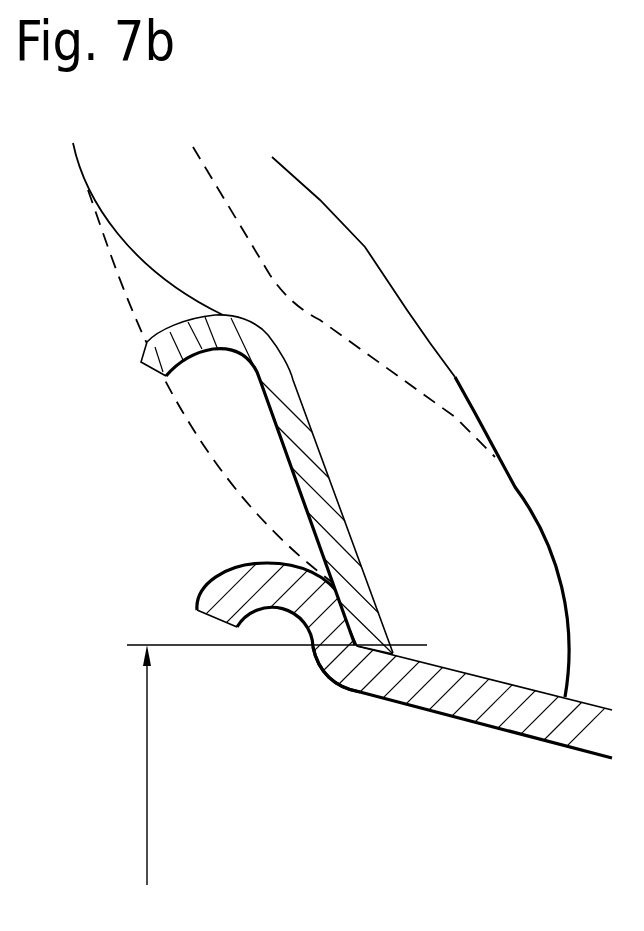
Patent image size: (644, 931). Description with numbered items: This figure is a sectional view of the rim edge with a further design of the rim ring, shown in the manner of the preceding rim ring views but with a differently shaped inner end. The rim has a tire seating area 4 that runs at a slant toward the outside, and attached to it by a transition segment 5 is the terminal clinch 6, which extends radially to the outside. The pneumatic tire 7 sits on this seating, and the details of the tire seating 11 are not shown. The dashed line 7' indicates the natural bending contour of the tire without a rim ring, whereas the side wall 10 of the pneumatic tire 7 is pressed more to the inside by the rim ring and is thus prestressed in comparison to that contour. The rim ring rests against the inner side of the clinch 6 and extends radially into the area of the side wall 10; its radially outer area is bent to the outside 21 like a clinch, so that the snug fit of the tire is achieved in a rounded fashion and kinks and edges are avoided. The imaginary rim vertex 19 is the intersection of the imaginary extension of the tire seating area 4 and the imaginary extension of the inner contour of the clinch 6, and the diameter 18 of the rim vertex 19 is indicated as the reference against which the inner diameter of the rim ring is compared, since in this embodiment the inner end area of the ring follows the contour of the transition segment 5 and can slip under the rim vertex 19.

The tire seating area 4 is at (493, 680).
The transition segment 5 is at (358, 650).
The clinch 6 is at (225, 592).
The pneumatic tire 7 is at (218, 229).
The natural bending contour of the tire 7' is at (193, 389).
The side wall 10 is at (370, 293).
The tire seating 11 is at (485, 498).
The diameter of the rim vertex 18 is at (145, 747).
The rim vertex 19 is at (352, 647).
The outward-bent area 21 is at (197, 332).